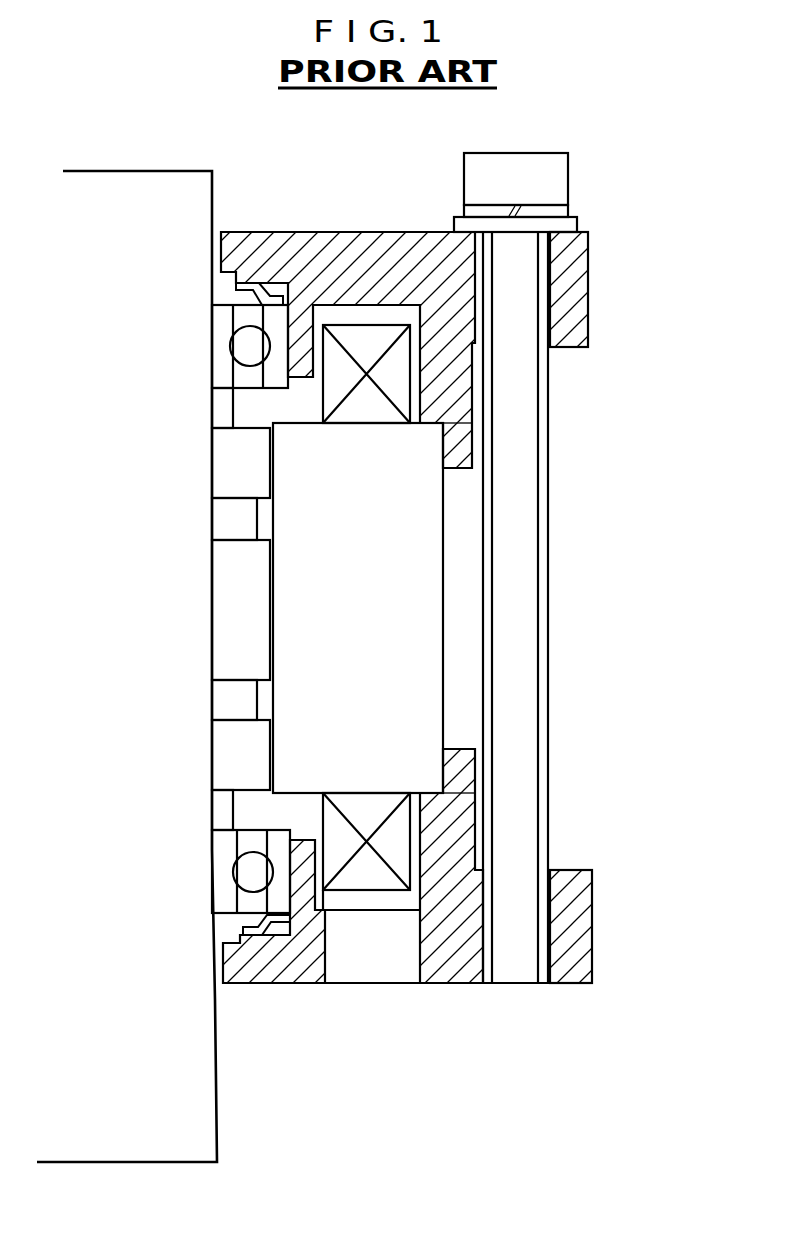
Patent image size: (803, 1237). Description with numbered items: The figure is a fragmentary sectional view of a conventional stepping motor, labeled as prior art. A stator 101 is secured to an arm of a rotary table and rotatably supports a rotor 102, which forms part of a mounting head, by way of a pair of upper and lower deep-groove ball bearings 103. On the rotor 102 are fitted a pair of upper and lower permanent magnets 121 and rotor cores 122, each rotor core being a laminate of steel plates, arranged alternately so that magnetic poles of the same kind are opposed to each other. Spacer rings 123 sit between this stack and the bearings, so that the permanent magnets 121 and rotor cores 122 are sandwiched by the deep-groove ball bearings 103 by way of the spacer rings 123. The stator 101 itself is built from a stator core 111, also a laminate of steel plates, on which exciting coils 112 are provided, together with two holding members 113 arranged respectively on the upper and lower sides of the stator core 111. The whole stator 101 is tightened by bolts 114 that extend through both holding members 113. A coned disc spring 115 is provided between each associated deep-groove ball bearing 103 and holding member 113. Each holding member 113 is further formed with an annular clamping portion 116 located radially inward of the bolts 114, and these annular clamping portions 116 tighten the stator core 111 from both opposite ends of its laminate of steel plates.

The stator 101 is at (641, 376).
The rotor 102 is at (152, 183).
The deep-groove ball bearings 103 is at (215, 347).
The stator core 111 is at (410, 565).
The exciting coils 112 is at (363, 412).
The holding members 113 is at (583, 255).
The bolts 114 is at (558, 176).
The coned disc spring 115 is at (262, 283).
The annular clamping portions 116 is at (455, 408).
The permanent magnets 121 is at (215, 518).
The rotor cores 122 is at (215, 462).
The spacer rings 123 is at (215, 407).